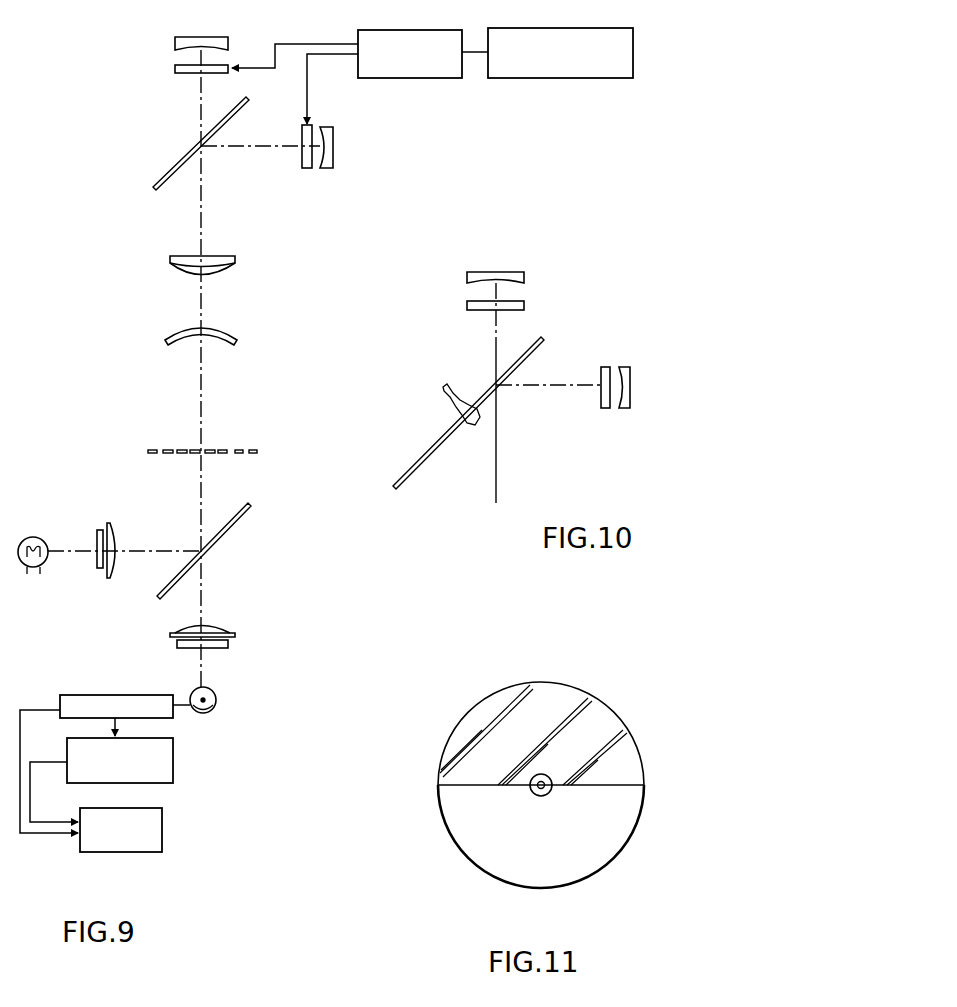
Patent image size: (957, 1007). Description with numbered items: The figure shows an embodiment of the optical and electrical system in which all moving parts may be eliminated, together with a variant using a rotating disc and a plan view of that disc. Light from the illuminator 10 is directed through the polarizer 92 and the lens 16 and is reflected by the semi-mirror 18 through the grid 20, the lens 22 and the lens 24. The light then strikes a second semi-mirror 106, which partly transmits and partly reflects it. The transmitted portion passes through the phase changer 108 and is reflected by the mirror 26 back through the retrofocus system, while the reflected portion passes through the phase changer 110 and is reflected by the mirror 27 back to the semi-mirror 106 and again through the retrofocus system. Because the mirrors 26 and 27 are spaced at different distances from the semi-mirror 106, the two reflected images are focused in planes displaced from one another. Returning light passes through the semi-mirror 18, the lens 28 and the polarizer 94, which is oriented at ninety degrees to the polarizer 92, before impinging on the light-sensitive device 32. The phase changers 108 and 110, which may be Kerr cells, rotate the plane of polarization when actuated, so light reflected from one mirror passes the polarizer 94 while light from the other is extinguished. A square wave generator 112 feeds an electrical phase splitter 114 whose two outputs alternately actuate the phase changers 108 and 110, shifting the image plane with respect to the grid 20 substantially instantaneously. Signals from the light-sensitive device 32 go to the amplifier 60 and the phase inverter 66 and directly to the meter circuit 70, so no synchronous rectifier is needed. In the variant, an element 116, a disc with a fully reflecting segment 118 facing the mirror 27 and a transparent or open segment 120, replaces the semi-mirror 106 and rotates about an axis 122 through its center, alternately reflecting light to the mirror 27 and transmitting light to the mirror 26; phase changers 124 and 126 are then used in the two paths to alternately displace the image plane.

In FIG. 9, the illuminator 10 is at (37, 537).
In FIG. 9, the lens 16 is at (117, 536).
In FIG. 9, the semi-mirror 18 is at (230, 532).
In FIG. 9, the grid 20 is at (222, 452).
In FIG. 9, the lens 22 is at (237, 338).
In FIG. 9, the lens 24 is at (236, 262).
In FIG. 9, the mirror 26 is at (175, 41).
In FIG. 10, the mirror 26 is at (508, 272).
In FIG. 9, the mirror 27 is at (334, 137).
In FIG. 10, the mirror 27 is at (632, 377).
In FIG. 9, the lens 28 is at (220, 628).
In FIG. 9, the light-sensitive device 32 is at (217, 698).
In FIG. 9, the amplifier 60 is at (108, 693).
In FIG. 9, the phase inverter 66 is at (173, 768).
In FIG. 9, the meter circuit 70 is at (163, 828).
In FIG. 9, the polarizer 92 is at (97, 533).
In FIG. 9, the polarizer 94 is at (229, 645).
In FIG. 9, the semi-mirror 106 is at (197, 148).
In FIG. 9, the phase changer 108 is at (178, 74).
In FIG. 9, the phase changer 110 is at (302, 160).
In FIG. 9, the square wave generator 112 is at (560, 27).
In FIG. 9, the phase splitter 114 is at (428, 29).
In FIG. 10, the element 116 is at (439, 453).
In FIG. 11, the element 116 is at (439, 838).
In FIG. 11, the segment 118 is at (635, 763).
In FIG. 11, the segment 120 is at (630, 822).
In FIG. 10, the axis 122 is at (447, 400).
In FIG. 10, the phase changer 124 is at (523, 303).
In FIG. 10, the phase changer 126 is at (605, 367).